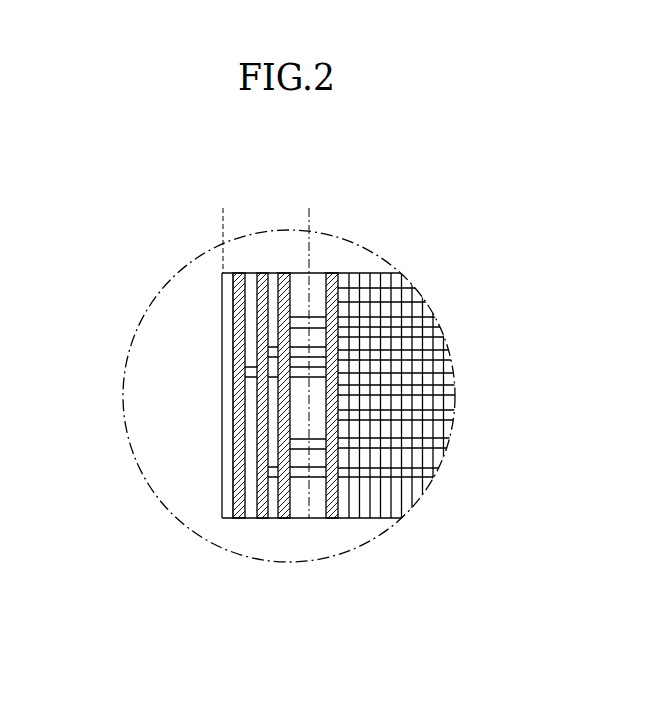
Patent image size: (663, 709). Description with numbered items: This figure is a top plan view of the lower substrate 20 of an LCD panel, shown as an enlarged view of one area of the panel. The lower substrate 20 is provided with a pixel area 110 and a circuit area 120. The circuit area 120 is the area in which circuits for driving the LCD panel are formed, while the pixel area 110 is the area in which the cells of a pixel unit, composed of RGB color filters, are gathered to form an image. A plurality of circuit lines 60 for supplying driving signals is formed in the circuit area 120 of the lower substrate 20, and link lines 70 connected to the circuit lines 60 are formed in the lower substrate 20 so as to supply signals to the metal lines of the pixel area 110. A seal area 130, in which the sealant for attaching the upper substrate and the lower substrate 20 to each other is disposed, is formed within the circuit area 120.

The lower substrate 20 is at (222, 388).
The circuit lines 60 is at (283, 518).
The link lines 70 is at (320, 518).
The pixel area 110 is at (330, 388).
The circuit area 120 is at (343, 250).
The seal area 130 is at (309, 218).